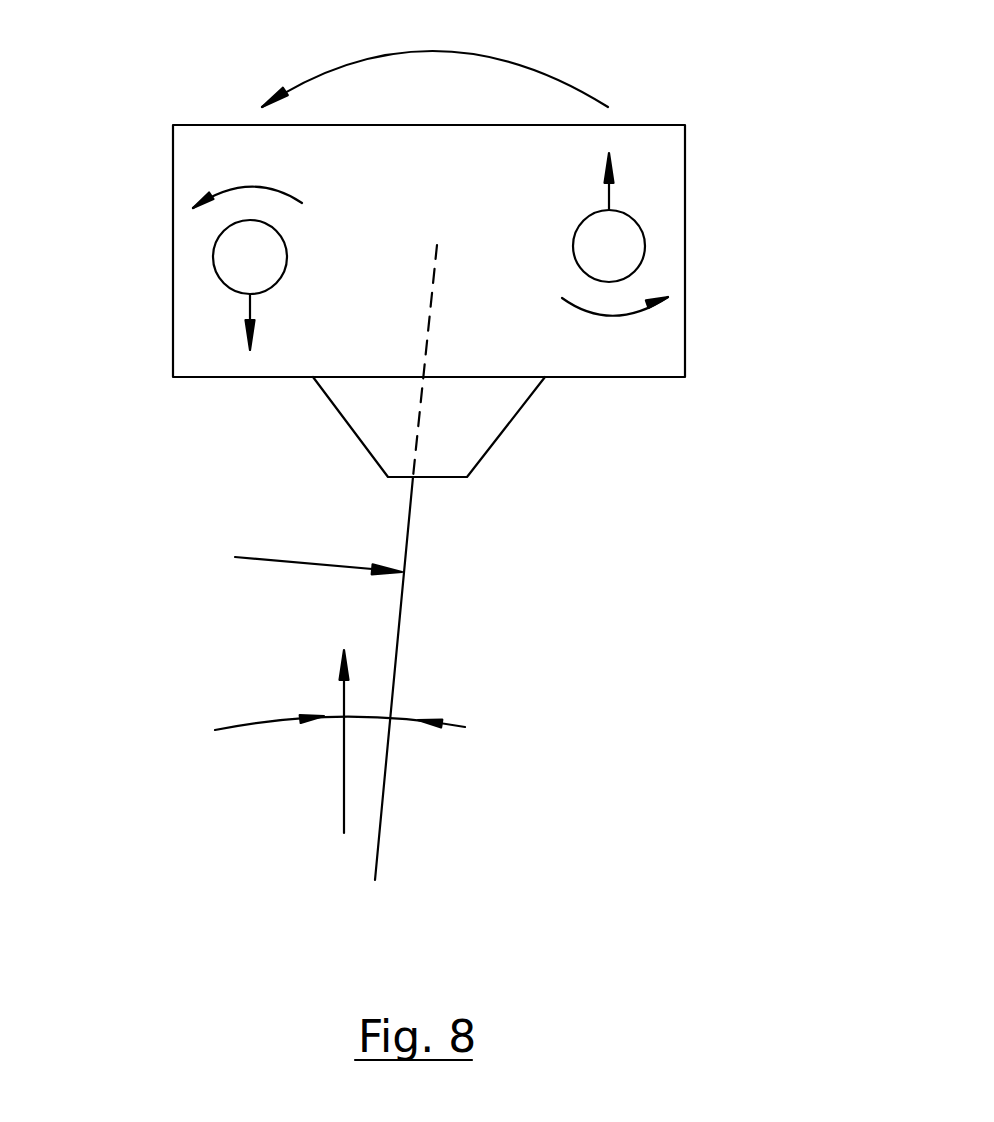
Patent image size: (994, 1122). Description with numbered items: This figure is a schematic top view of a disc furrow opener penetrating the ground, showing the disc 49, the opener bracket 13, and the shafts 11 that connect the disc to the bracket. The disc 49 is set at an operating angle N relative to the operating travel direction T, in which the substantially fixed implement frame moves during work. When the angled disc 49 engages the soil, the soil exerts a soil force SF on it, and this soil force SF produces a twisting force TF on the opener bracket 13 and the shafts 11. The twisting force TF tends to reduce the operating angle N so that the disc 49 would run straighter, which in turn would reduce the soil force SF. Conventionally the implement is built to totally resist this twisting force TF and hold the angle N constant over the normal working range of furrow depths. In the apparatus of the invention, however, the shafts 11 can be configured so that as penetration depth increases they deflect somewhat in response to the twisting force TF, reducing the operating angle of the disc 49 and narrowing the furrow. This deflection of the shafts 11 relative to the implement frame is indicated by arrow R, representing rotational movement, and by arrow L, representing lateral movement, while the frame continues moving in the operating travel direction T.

The opener bracket 13 is at (685, 178).
The shafts 11 is at (645, 247).
The disc 49 is at (412, 800).
The lateral movement L is at (250, 293).
The rotational movement R is at (593, 316).
The twisting force TF is at (435, 55).
The soil force SF is at (294, 556).
The operating travel direction T is at (343, 723).
The operating angle N is at (370, 718).